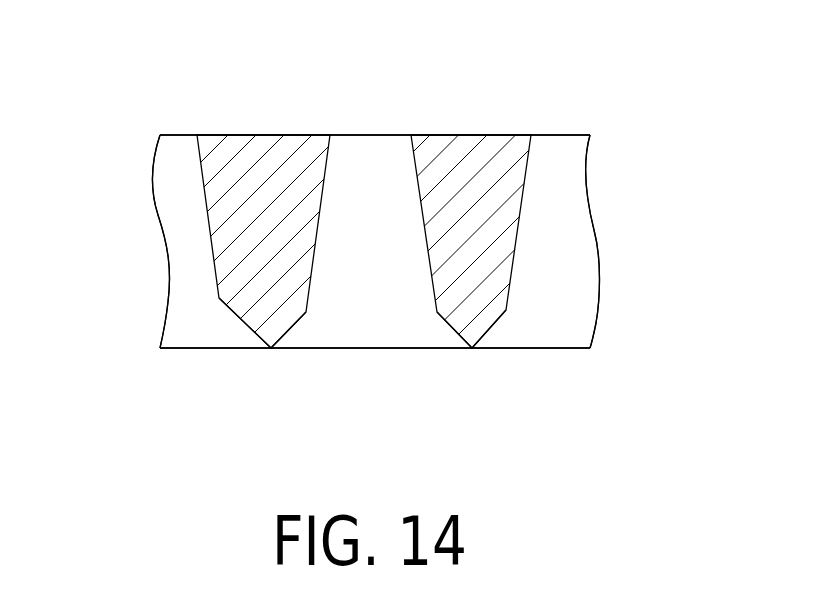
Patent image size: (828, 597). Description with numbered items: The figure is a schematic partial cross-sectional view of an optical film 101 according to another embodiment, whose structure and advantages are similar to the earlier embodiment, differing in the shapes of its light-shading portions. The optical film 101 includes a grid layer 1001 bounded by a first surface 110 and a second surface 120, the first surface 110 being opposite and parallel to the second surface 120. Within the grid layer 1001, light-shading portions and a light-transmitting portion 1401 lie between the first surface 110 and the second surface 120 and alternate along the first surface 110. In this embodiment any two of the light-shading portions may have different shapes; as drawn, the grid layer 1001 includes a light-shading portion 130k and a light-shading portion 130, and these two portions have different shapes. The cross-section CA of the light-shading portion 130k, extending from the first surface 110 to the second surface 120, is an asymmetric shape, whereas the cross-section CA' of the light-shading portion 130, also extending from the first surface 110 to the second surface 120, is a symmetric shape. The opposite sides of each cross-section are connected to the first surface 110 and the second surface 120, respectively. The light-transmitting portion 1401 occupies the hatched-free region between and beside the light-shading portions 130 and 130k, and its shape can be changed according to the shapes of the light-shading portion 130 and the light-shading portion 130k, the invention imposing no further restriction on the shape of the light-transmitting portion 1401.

The optical film 101 is at (112, 36).
The grid layer 1001 is at (185, 137).
The light-shading portion 130k is at (278, 150).
The first surface 110 is at (572, 132).
The second surface 120 is at (572, 352).
The light-shading portion 130 is at (498, 235).
The light-transmitting portion 1401 is at (557, 300).
The cross-section CA is at (272, 354).
The cross-section CA' is at (483, 360).